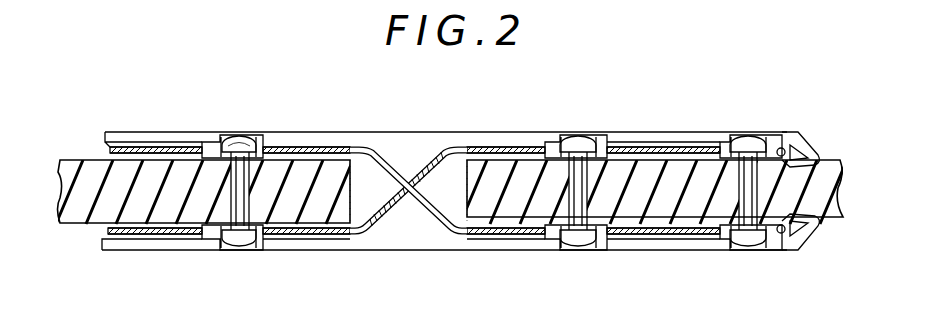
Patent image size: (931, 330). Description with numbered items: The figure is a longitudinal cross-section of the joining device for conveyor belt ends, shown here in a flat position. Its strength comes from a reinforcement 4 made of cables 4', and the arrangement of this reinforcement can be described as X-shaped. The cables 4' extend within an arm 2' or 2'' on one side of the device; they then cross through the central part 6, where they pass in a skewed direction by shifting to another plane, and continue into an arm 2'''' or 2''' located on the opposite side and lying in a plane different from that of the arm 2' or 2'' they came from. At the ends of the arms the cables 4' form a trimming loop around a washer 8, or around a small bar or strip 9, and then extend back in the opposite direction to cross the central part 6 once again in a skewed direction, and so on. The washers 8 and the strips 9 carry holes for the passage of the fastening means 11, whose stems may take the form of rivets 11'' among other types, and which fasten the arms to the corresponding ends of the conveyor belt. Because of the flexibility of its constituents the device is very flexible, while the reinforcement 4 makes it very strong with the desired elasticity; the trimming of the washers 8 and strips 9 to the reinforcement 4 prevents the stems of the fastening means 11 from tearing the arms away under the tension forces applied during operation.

The arm 2' is at (227, 114).
The arm 2'' is at (568, 117).
The arm 2''' is at (226, 266).
The arm 2'''' is at (568, 266).
The reinforcement 4 is at (427, 192).
The cables 4' is at (408, 192).
The central part 6 is at (418, 150).
The washer 8 is at (281, 143).
The strip 9 is at (800, 137).
The fastening means 11 is at (494, 160).
The rivets 11'' is at (240, 110).